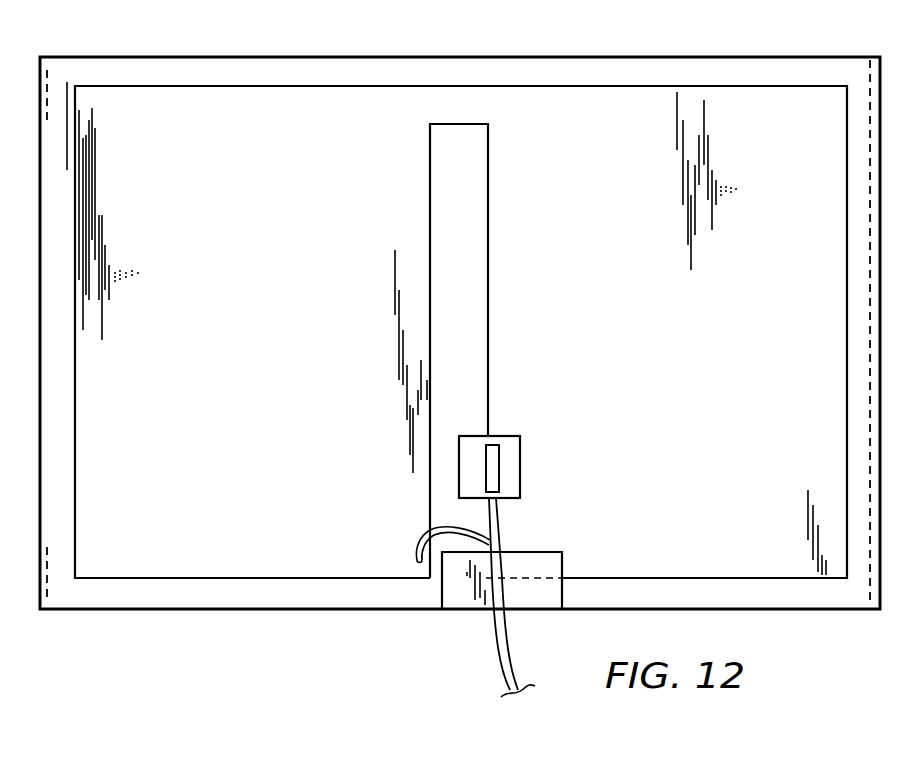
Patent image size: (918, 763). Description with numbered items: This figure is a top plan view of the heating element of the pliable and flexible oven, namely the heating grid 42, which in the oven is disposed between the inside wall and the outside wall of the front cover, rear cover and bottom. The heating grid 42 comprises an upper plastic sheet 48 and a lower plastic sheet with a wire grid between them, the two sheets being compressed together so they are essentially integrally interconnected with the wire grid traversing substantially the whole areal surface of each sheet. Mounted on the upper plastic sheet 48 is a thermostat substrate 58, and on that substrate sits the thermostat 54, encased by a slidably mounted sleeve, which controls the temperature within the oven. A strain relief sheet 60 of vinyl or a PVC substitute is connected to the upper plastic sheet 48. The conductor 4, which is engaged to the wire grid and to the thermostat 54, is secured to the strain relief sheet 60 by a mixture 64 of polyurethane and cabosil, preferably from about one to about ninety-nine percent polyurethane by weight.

The heating grid 42 is at (595, 48).
The upper plastic sheet 48 is at (774, 95).
The thermostat substrate 58 is at (512, 443).
The thermostat 54 is at (493, 468).
The mixture of polyurethane and cabosil 64 is at (508, 558).
The strain relief sheet 60 is at (453, 572).
The conductor 4 is at (503, 668).